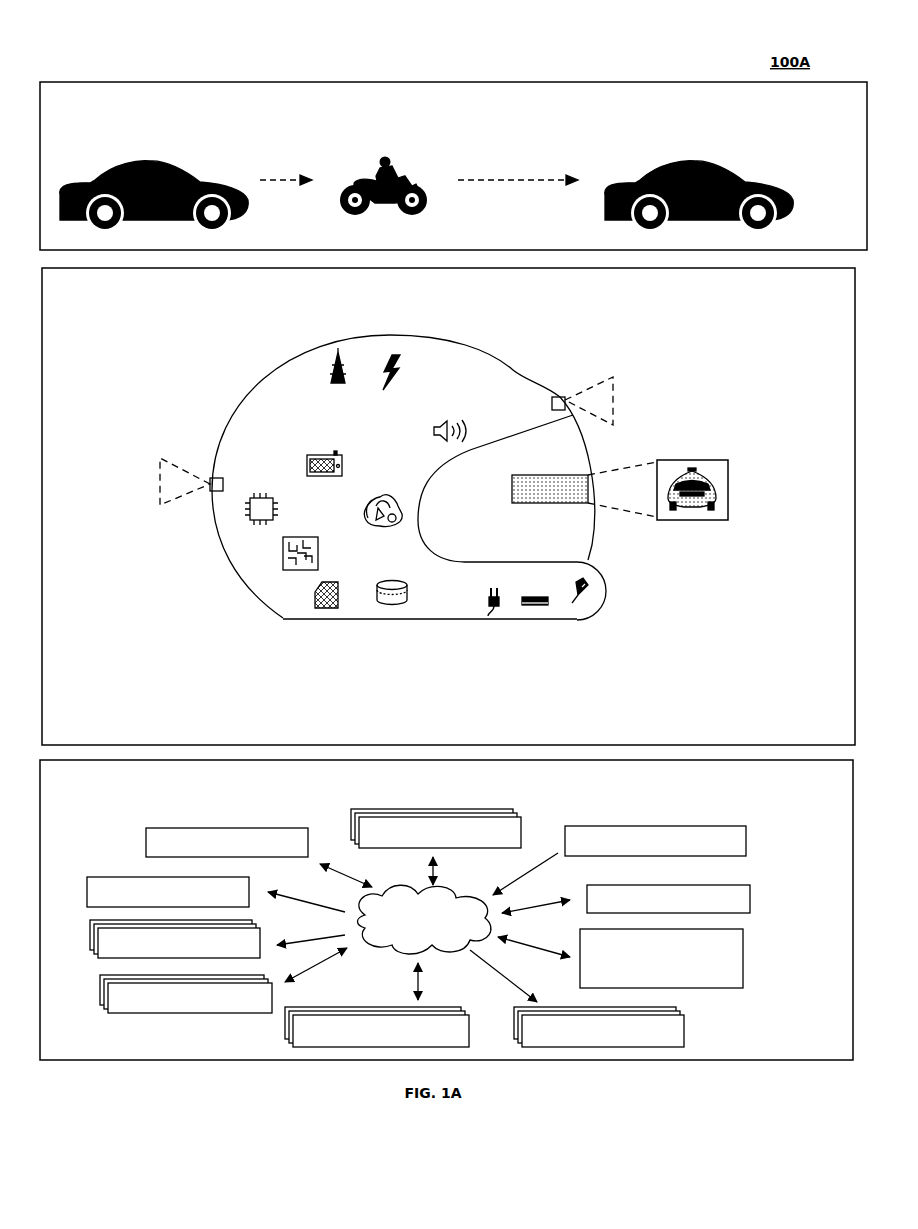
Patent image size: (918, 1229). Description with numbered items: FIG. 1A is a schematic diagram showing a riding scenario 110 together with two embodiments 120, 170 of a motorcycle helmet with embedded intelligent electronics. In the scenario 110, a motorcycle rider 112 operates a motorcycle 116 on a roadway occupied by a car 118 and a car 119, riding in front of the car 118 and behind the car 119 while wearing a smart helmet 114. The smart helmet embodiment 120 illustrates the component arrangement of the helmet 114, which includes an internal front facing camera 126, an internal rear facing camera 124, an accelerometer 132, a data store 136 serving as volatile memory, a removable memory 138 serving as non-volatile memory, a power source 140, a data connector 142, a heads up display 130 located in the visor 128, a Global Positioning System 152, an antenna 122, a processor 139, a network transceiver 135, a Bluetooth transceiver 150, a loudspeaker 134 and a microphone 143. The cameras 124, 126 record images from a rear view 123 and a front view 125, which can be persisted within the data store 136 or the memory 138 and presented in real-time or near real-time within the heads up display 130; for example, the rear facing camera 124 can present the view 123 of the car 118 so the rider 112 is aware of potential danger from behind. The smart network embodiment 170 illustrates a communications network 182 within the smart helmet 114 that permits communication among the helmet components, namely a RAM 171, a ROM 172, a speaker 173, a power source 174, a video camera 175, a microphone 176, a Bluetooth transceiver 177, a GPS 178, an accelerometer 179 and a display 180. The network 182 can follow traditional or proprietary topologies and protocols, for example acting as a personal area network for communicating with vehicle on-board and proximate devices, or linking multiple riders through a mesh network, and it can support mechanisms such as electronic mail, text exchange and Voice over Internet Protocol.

The scenario 110 is at (453, 166).
The motorcycle rider 112 is at (372, 172).
The smart helmet 114 is at (430, 135).
The motorcycle 116 is at (418, 206).
The car 118 is at (138, 162).
The car 119 is at (688, 162).
The smart helmet embodiment 120 is at (448, 506).
The antenna 122 is at (337, 360).
The view 123 is at (158, 490).
The internal rear facing camera 124 is at (212, 474).
The view 125 is at (614, 396).
The internal front facing camera 126 is at (560, 396).
The visor 128 is at (578, 452).
The heads up display 130 is at (573, 505).
The accelerometer 132 is at (300, 570).
The loudspeaker 134 is at (436, 427).
The network transceiver 135 is at (397, 378).
The data store 136 is at (390, 604).
The removable memory 138 is at (313, 603).
The processor 139 is at (250, 520).
The power source 140 is at (493, 612).
The data connector 142 is at (545, 607).
The microphone 143 is at (583, 588).
The Bluetooth transceiver 150 is at (377, 497).
The Global Positioning System 152 is at (323, 455).
The smart network embodiment 170 is at (446, 910).
The RAM 171 is at (259, 857).
The ROM 172 is at (216, 894).
The speaker 173 is at (217, 939).
The power source 174 is at (223, 980).
The video camera 175 is at (377, 1005).
The microphone 176 is at (577, 998).
The Bluetooth transceiver 177 is at (620, 958).
The GPS 178 is at (626, 899).
The accelerometer 179 is at (619, 860).
The display 180 is at (436, 847).
The communications network 182 is at (424, 919).